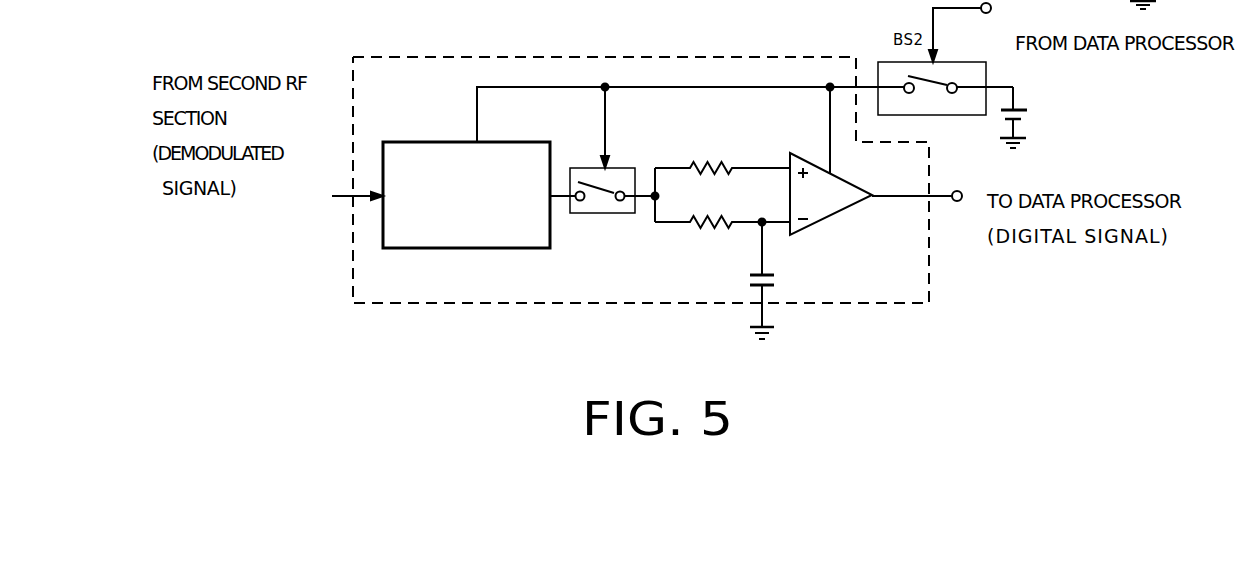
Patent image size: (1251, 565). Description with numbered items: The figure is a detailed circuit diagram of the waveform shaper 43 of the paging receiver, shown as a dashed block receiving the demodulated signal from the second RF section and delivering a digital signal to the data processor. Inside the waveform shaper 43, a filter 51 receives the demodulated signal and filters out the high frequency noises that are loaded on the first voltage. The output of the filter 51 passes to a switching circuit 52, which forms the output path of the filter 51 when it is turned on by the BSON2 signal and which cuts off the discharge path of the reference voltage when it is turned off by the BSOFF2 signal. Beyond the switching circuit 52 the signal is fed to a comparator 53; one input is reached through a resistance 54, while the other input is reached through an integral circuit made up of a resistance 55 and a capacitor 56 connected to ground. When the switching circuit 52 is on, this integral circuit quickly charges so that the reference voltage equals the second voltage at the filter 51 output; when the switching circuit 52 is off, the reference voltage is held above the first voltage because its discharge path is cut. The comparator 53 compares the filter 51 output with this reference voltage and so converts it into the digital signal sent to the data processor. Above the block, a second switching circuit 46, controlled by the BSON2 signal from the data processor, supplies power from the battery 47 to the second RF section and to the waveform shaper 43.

The waveform shaper 43 is at (451, 55).
The filter 51 is at (505, 141).
The switching circuit 52 is at (619, 166).
The comparator 53 is at (847, 181).
The resistor 54 is at (722, 158).
The resistance 55 is at (722, 212).
The capacitor 56 is at (775, 280).
The second switching circuit 46 is at (961, 61).
The battery 47 is at (1023, 117).